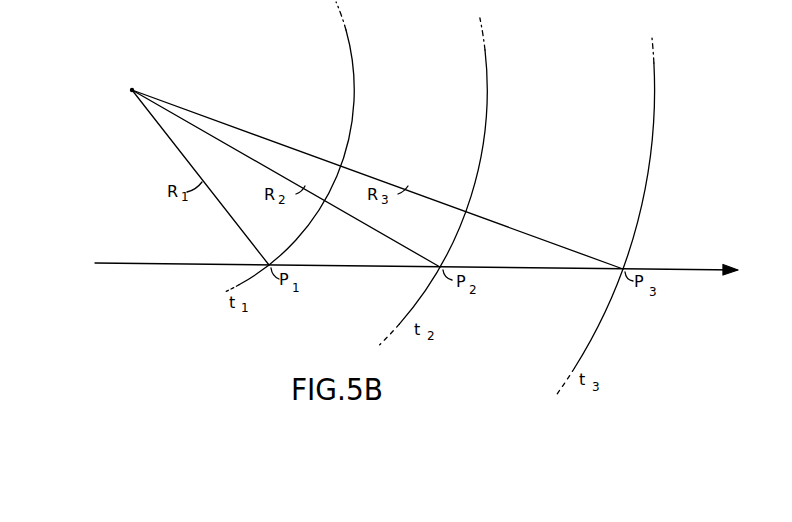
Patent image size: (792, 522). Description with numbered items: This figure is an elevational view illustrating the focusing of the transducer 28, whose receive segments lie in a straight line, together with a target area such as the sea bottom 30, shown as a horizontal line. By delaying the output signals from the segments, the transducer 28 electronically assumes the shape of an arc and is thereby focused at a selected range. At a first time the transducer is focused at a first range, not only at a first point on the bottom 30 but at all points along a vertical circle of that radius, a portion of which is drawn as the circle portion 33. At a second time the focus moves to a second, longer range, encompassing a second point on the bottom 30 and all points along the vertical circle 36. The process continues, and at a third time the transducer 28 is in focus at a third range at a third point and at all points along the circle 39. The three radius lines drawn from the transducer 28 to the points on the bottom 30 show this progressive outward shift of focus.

The transducer 28 is at (130, 89).
The sea bottom 30 is at (136, 262).
The vertical circle portion 33 is at (359, 89).
The vertical circle 36 is at (489, 90).
The circle 39 is at (657, 92).